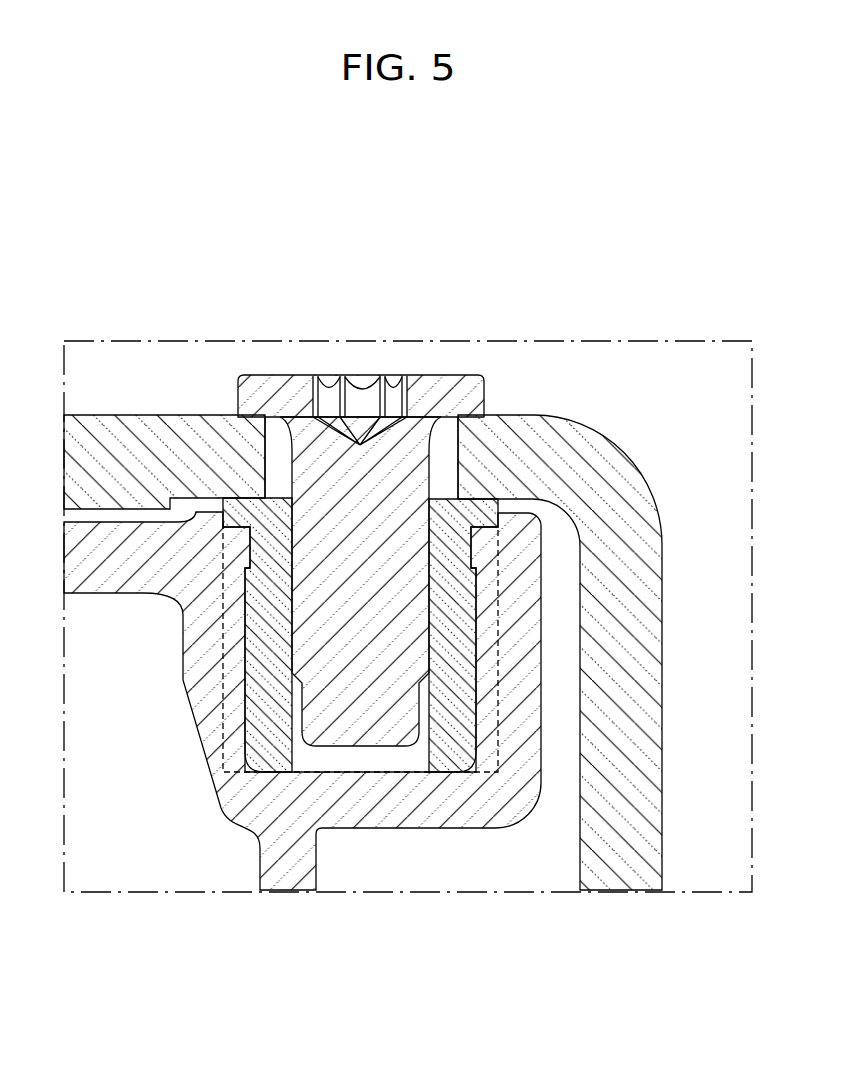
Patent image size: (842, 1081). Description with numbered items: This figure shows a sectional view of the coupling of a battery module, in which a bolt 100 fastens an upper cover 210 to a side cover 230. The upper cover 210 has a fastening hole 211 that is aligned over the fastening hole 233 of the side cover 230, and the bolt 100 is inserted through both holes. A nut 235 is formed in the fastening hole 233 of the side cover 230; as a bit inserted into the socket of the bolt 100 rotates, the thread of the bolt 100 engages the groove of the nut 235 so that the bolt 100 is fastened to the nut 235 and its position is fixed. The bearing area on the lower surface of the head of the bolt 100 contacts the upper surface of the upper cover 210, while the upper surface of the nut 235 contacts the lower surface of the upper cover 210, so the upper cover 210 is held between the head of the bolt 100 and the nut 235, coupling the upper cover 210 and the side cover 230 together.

The bolt 100 is at (300, 370).
The upper cover 210 is at (505, 415).
The fastening hole 211 is at (432, 418).
The side cover 230 is at (352, 832).
The fastening hole 233 is at (403, 775).
The nut 235 is at (457, 750).